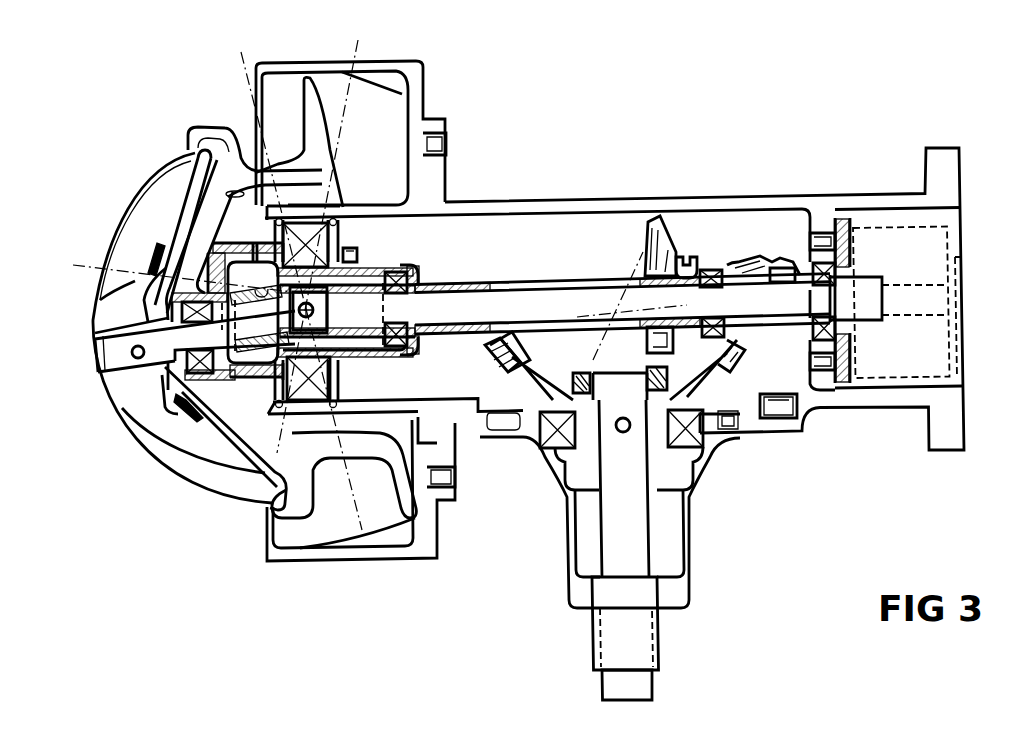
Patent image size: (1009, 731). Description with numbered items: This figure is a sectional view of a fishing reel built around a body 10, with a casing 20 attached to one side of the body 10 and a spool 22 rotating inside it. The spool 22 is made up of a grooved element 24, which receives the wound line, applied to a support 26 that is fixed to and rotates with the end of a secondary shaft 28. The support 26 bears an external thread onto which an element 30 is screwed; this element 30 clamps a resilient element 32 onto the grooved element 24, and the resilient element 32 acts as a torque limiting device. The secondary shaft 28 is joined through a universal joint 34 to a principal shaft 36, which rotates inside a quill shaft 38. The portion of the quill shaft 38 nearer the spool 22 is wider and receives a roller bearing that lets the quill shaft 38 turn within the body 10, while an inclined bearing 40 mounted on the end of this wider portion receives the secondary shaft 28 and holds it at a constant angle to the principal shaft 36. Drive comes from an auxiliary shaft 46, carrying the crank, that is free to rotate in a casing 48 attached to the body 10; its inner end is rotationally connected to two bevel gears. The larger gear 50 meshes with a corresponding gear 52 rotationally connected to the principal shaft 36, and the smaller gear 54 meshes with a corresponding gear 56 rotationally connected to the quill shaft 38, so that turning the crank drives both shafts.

The body 10 is at (742, 200).
The casing 20 is at (417, 80).
The spool 22 is at (128, 198).
The grooved element 24 is at (310, 128).
The support 26 is at (278, 187).
The secondary shaft 28 is at (118, 362).
The element 30 is at (118, 307).
The resilient element 32 is at (183, 415).
The universal joint 34 is at (285, 289).
The principal shaft 36 is at (463, 305).
The quill shaft 38 is at (560, 285).
The inclined bearing 40 is at (216, 254).
The auxiliary shaft 46 is at (633, 540).
The casing 48 is at (697, 455).
The larger gear 50 is at (705, 372).
The gear 52 is at (785, 327).
The smaller gear 54 is at (575, 385).
The gear 56 is at (665, 258).